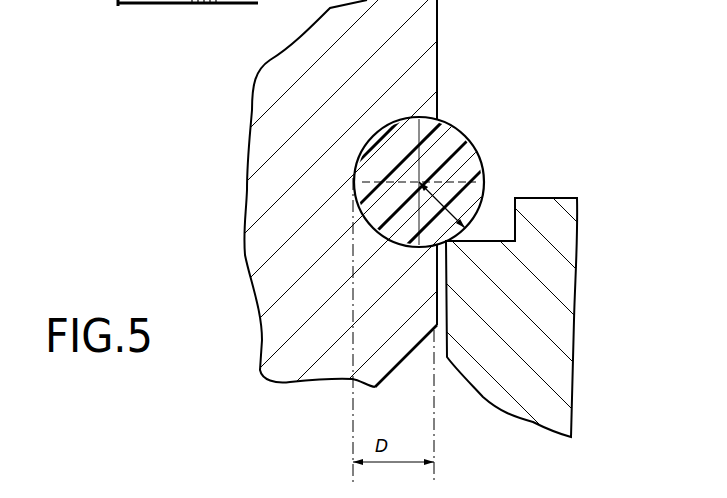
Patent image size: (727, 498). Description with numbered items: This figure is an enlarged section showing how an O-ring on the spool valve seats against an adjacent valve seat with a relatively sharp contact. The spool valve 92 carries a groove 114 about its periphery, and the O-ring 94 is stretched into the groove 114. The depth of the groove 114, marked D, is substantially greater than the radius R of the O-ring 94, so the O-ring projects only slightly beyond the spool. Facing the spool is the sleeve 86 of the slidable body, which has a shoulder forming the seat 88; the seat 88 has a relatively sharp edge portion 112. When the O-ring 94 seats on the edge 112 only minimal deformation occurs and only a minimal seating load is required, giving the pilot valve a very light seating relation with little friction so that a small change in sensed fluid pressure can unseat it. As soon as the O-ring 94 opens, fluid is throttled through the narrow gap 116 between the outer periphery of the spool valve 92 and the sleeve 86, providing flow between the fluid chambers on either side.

The sleeve 86 is at (542, 221).
The seat 88 is at (488, 241).
The spool valve 92 is at (410, 55).
The O-ring 94 is at (443, 135).
The sharp edge portion 112 is at (477, 228).
The groove 114 is at (357, 181).
The narrow gap 116 is at (441, 322).